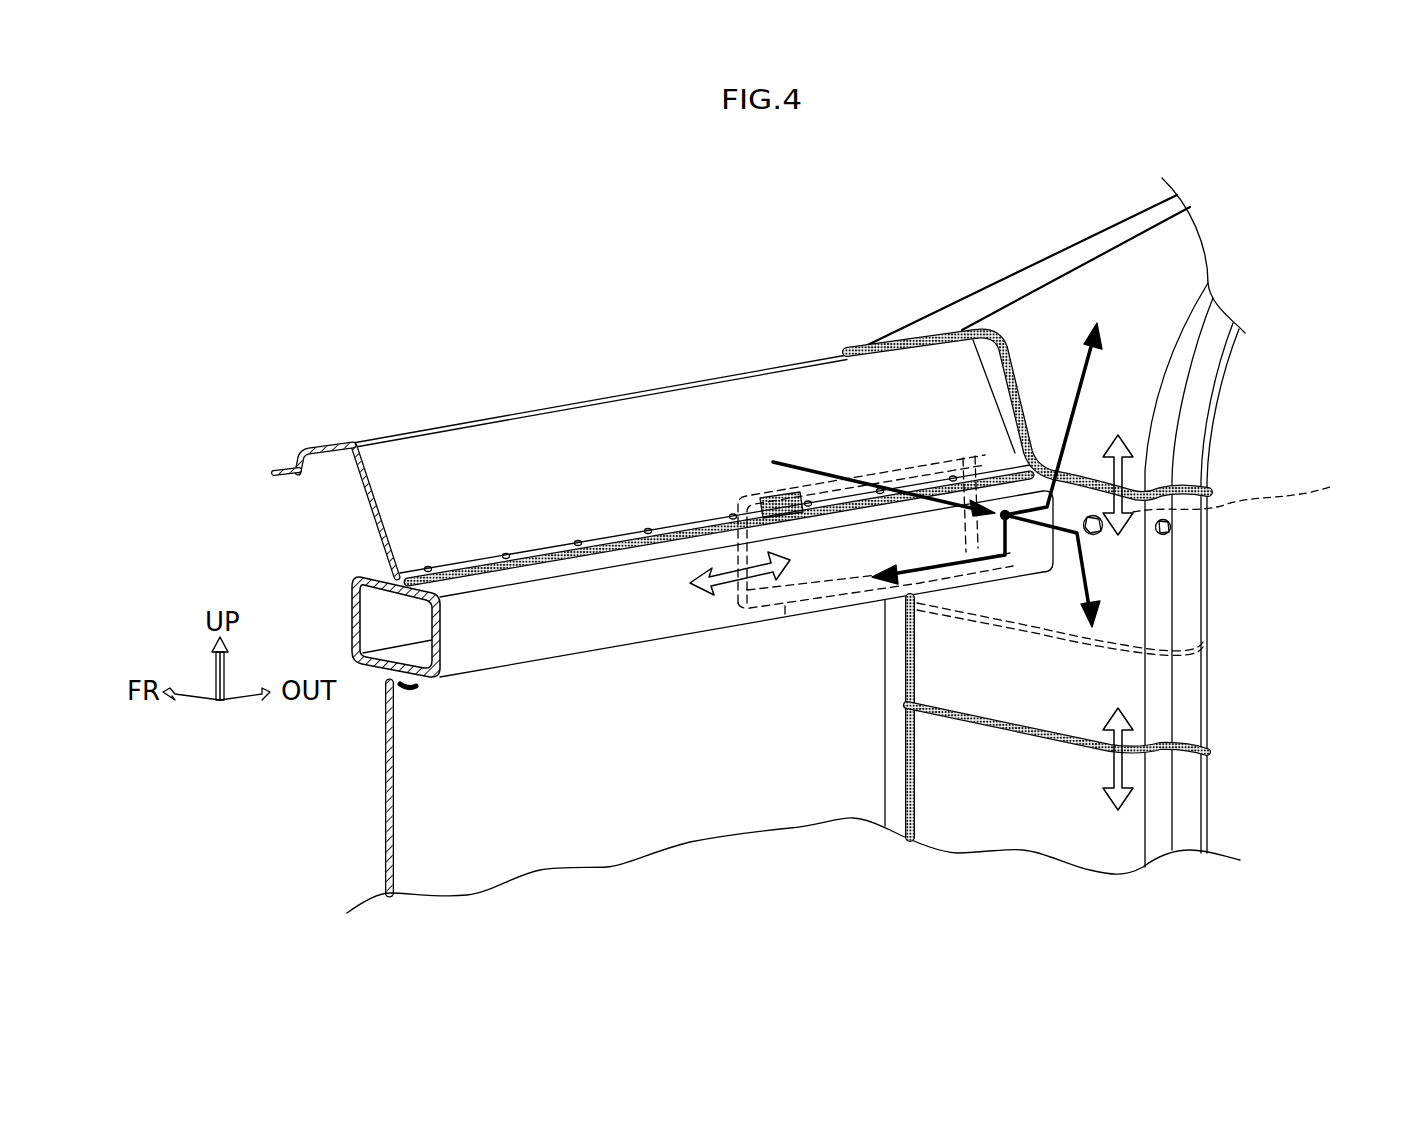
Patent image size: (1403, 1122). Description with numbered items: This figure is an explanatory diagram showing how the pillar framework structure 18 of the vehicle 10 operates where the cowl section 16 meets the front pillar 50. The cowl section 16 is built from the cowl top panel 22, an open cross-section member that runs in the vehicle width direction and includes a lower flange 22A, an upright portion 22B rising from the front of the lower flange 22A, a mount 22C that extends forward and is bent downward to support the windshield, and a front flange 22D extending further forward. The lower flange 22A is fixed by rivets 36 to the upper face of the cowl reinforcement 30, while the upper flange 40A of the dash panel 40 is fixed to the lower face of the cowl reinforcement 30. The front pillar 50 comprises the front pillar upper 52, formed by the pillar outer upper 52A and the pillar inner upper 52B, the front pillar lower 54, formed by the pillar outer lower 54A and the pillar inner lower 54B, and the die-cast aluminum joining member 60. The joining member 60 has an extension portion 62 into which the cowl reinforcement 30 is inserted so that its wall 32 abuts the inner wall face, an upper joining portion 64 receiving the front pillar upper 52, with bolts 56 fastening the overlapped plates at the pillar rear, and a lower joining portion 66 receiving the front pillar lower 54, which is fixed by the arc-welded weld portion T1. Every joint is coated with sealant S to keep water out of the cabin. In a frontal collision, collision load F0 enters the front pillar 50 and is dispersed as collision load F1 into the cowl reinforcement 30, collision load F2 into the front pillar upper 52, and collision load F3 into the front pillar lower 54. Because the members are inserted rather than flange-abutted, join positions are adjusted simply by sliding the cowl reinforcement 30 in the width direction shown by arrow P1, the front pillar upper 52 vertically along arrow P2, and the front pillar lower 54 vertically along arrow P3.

The vehicle 10 is at (618, 397).
The cowl section 16 is at (618, 425).
The pillar framework structure 18 is at (1004, 249).
The cowl top panel 22 is at (618, 449).
The lower flange 22A is at (692, 460).
The upright portion 22B is at (405, 455).
The mount 22C is at (323, 447).
The front flange 22D is at (287, 463).
The cowl reinforcement 30 is at (660, 584).
The wall 32 is at (350, 620).
The rivets 36 is at (649, 528).
The dash panel 40 is at (751, 798).
The upper flange 40A is at (381, 694).
The front pillar 50 is at (1230, 488).
The front pillar upper 52 is at (1243, 575).
The pillar outer upper 52A is at (1198, 385).
The pillar inner upper 52B is at (1113, 425).
The front pillar lower 54 is at (1250, 811).
The pillar outer lower 54A is at (1186, 788).
The pillar inner lower 54B is at (1120, 823).
The bolts 56 is at (1097, 537).
The joining member 60 is at (1211, 695).
The extension portion 62 is at (748, 603).
The upper joining portion 64 is at (1247, 491).
The lower joining portion 66 is at (1013, 697).
The sealant S is at (898, 350).
The weld portion T1 is at (1207, 752).
The collision load F0 is at (818, 472).
The collision load F1 is at (945, 570).
The collision load F2 is at (1082, 380).
The collision load F3 is at (1080, 590).
The arrow P1 is at (727, 587).
The arrow P2 is at (1128, 470).
The arrow P3 is at (1108, 762).